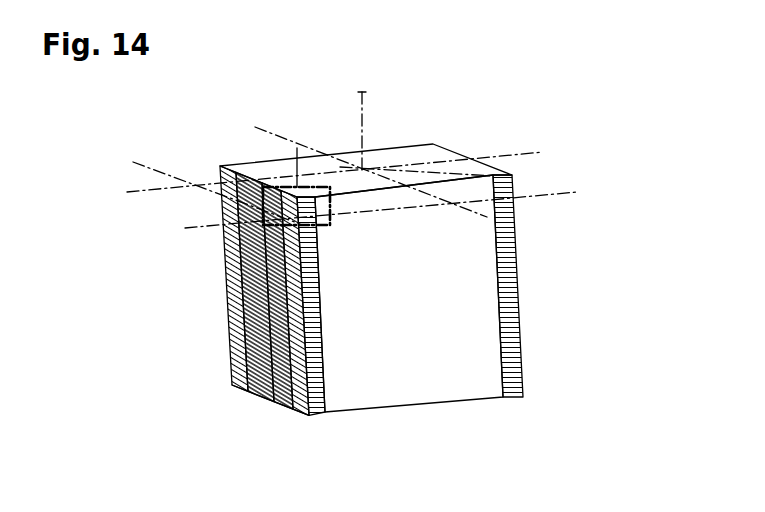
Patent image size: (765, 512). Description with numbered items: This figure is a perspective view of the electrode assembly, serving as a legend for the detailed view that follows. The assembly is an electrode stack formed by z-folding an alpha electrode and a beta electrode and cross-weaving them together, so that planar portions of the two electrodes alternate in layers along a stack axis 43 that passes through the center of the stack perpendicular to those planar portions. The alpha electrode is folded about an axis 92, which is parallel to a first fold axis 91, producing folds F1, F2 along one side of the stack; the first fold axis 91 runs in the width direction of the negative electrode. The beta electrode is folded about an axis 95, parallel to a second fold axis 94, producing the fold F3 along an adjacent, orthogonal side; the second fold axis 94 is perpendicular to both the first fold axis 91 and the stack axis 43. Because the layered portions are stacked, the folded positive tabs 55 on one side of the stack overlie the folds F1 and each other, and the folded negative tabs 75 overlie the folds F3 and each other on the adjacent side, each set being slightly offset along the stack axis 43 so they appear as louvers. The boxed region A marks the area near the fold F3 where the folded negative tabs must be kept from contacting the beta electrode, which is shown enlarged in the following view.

The stack axis 43 is at (364, 100).
The positive tabs 55 is at (267, 332).
The negative tabs 75 is at (470, 380).
The first fold axis 91 is at (292, 141).
The axis 92 is at (168, 175).
The second fold axis 94 is at (532, 152).
The axis 95 is at (573, 191).
The detail region A is at (297, 148).
The fold F1 is at (302, 407).
The fold F2 is at (523, 345).
The fold F3 is at (317, 410).